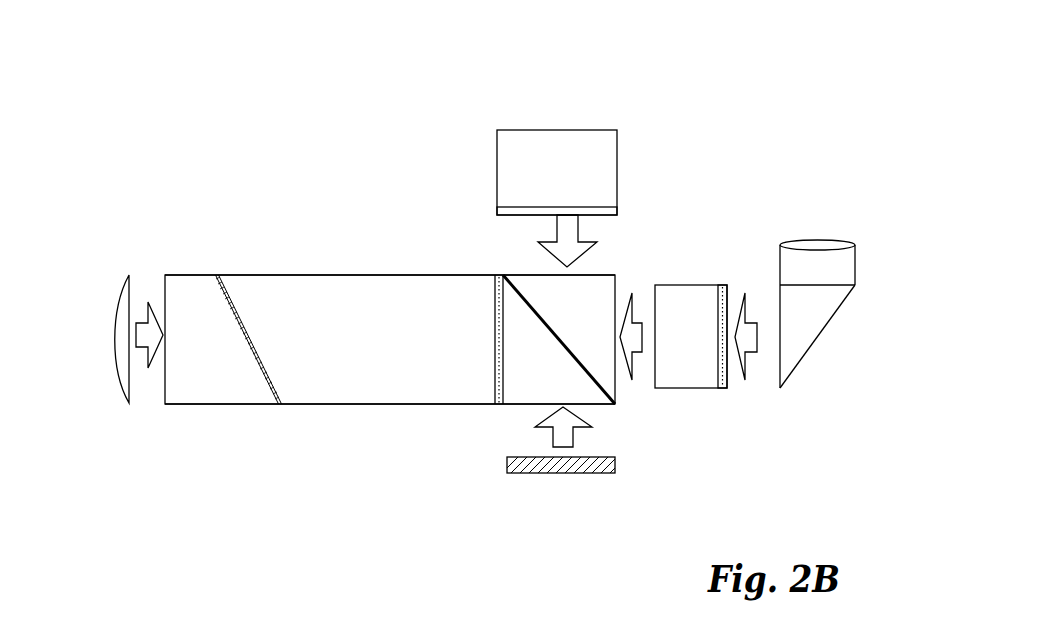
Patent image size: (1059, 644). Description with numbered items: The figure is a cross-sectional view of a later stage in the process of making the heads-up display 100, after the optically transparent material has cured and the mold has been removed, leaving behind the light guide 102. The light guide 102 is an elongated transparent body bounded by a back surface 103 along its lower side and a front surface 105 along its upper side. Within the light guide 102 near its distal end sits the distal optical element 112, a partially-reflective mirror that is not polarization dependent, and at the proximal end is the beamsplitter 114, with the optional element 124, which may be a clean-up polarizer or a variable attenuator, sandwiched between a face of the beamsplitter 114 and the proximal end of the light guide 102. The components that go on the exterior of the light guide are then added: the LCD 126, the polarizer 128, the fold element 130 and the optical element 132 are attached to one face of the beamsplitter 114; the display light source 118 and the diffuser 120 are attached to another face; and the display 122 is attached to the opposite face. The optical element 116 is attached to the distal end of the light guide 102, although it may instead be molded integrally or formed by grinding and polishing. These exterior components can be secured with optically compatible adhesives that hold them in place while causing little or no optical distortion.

The heads-up display 100 is at (381, 150).
The light guide 102 is at (352, 393).
The back surface 103 is at (460, 406).
The front surface 105 is at (387, 275).
The distal optical element 112 is at (243, 328).
The beam splitter 114 is at (512, 303).
The optical element 116 is at (127, 275).
The display light source 118 is at (557, 172).
The diffuser 120 is at (613, 210).
The display 122 is at (563, 473).
The element 124 is at (498, 404).
The LCD 126 is at (691, 336).
The polarizer 128 is at (722, 388).
The fold element 130 is at (815, 343).
The optical element 132 is at (780, 245).